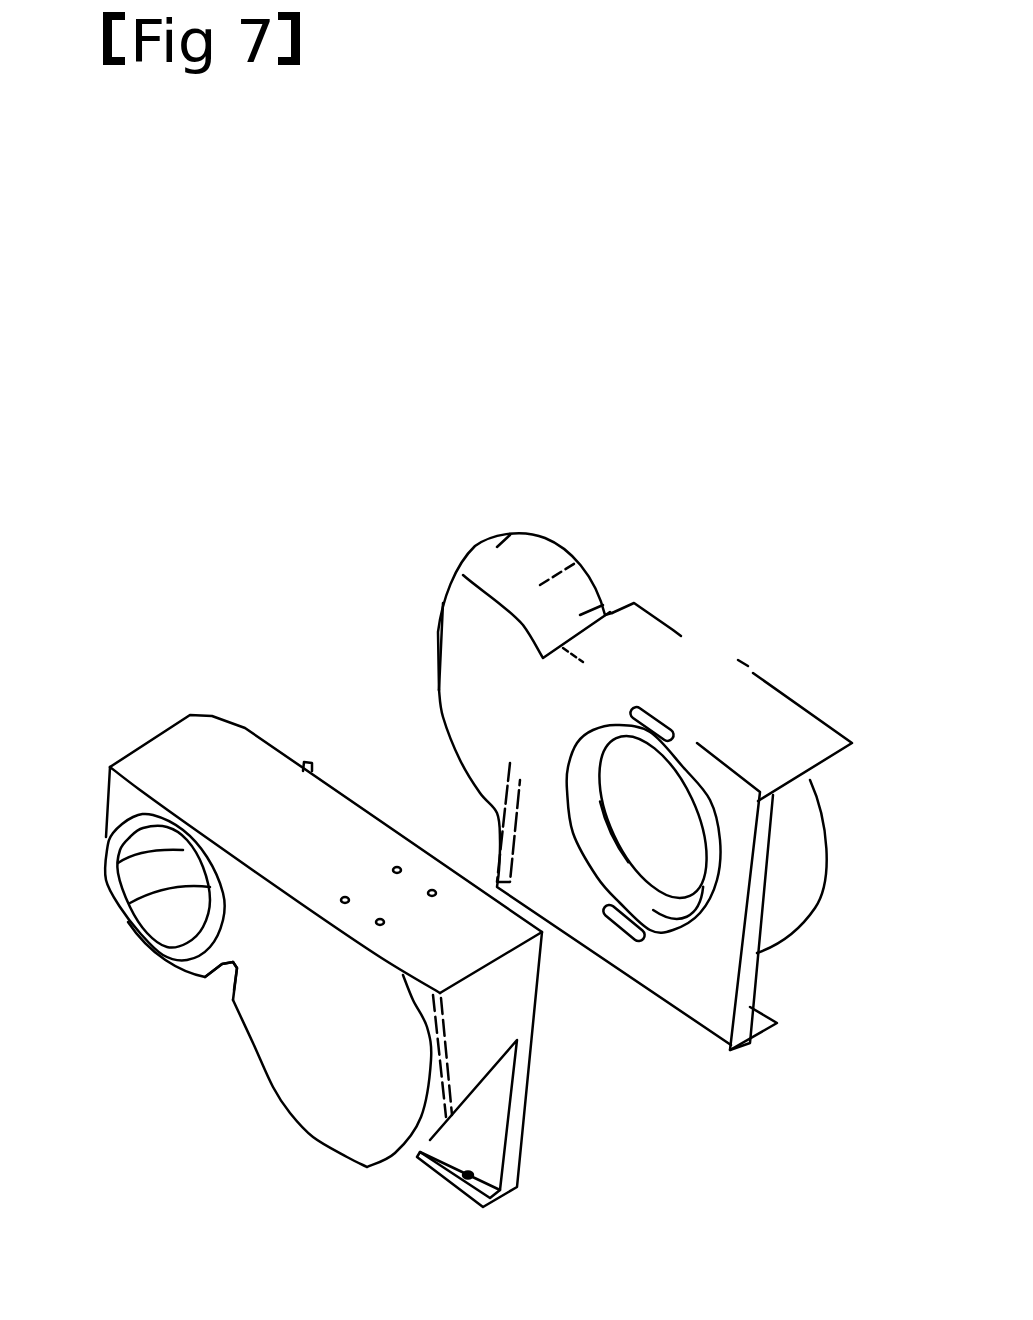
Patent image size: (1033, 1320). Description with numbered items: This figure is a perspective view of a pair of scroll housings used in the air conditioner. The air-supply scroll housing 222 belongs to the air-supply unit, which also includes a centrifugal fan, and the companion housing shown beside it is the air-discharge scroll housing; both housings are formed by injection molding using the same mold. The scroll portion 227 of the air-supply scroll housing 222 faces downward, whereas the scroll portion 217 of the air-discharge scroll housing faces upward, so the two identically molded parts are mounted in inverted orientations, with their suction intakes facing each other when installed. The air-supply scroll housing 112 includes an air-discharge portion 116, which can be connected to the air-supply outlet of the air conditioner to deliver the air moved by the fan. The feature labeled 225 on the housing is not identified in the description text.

The air-supply scroll housing 112 is at (292, 1110).
The air-discharge portion 116 is at (155, 900).
The scroll portion 217 is at (232, 997).
The air-supply scroll housing 222 is at (780, 668).
The fastening slots 225 is at (672, 847).
The scroll portion 227 is at (603, 592).